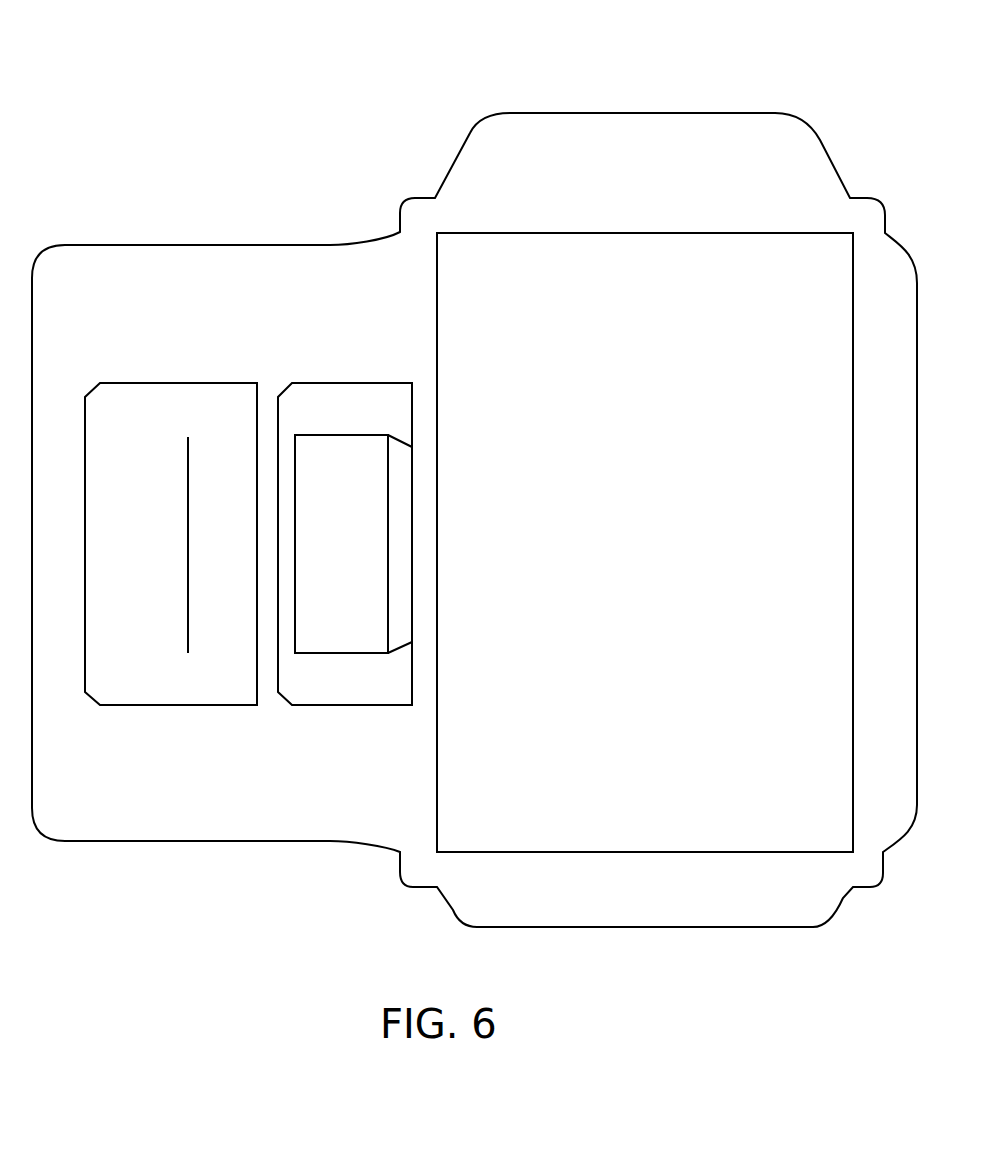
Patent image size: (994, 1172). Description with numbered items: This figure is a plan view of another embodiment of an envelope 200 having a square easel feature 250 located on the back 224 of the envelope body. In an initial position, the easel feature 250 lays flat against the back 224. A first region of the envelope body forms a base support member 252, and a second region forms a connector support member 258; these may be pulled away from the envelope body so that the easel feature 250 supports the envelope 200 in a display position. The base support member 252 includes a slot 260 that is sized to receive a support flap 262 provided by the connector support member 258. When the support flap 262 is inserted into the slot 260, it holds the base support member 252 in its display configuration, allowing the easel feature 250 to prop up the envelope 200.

The envelope 200 is at (474, 463).
The back 224 is at (115, 253).
The base support member 252 is at (171, 486).
The slot 260 is at (188, 545).
The easel feature 250 is at (340, 490).
The connector support member 258 is at (342, 766).
The support flap 262 is at (350, 447).